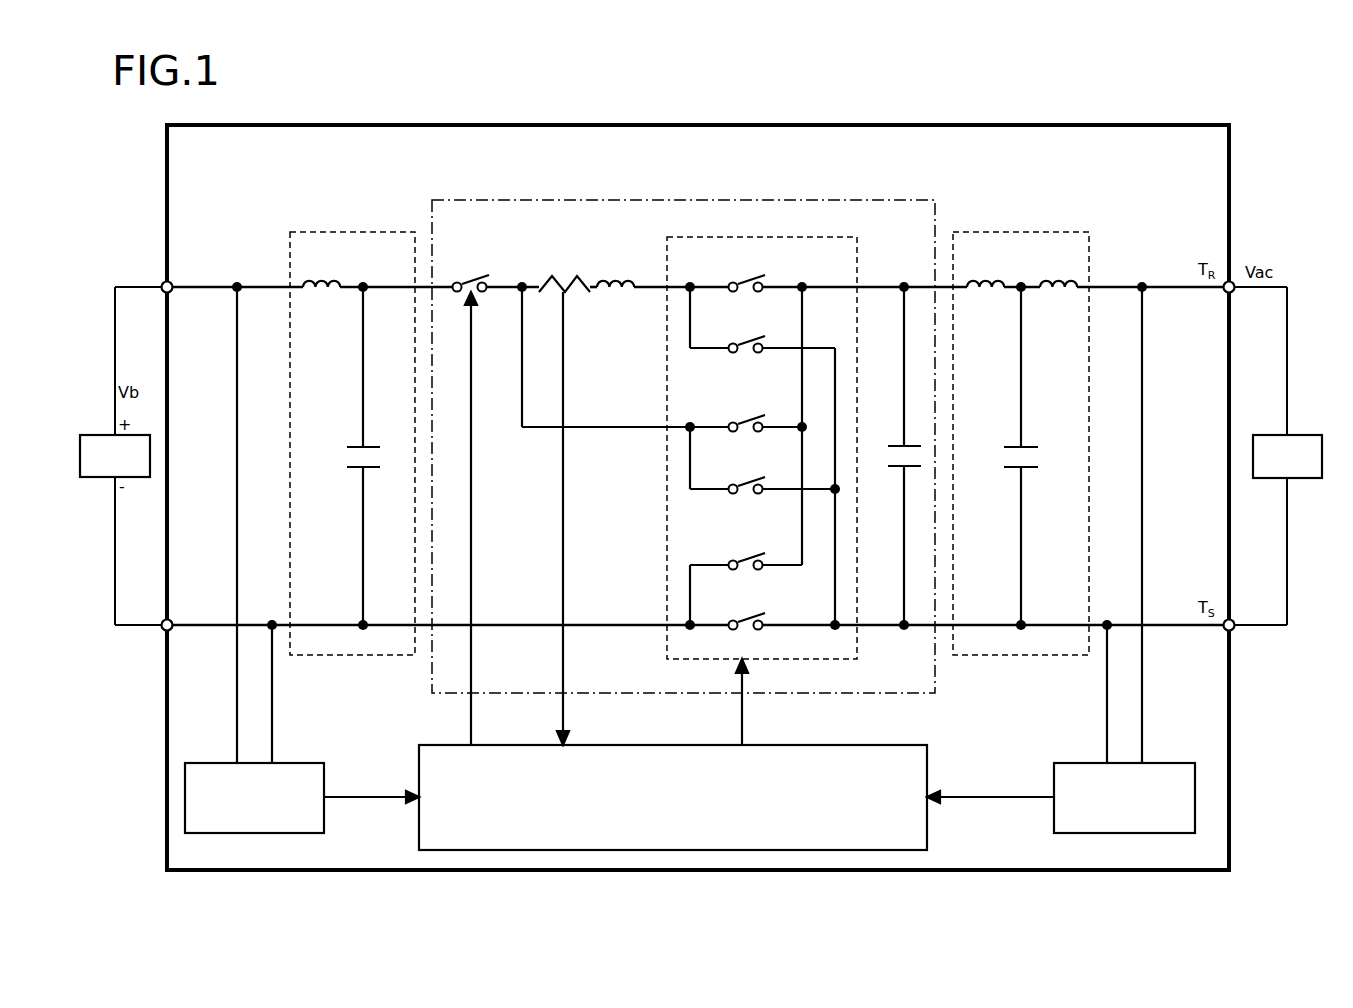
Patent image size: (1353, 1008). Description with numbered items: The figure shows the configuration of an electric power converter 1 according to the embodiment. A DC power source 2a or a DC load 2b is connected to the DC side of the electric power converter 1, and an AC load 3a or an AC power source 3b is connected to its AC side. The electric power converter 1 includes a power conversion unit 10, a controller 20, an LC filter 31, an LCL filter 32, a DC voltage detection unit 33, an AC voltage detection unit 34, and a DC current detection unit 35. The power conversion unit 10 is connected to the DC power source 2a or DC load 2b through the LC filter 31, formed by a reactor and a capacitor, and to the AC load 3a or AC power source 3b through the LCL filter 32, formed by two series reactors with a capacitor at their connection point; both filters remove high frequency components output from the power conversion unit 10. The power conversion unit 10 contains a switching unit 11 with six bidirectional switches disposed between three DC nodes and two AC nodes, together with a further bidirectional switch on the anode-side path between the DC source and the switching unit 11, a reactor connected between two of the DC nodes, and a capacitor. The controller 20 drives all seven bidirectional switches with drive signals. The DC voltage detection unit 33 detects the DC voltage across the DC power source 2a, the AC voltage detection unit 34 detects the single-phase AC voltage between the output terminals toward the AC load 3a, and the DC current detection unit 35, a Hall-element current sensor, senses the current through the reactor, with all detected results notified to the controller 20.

The electric power converter 1 is at (742, 125).
The DC power source 2a is at (102, 433).
The DC load 2b is at (102, 434).
The AC load 3a is at (1298, 437).
The AC power source 3b is at (1298, 434).
The power conversion unit 10 is at (857, 200).
The switching unit 11 is at (858, 248).
The controller 20 is at (876, 750).
The LC filter 31 is at (380, 232).
The LCL filter 32 is at (1052, 232).
The DC voltage detection unit 33 is at (299, 763).
The AC voltage detection unit 34 is at (1169, 763).
The DC current detection unit 35 is at (568, 277).